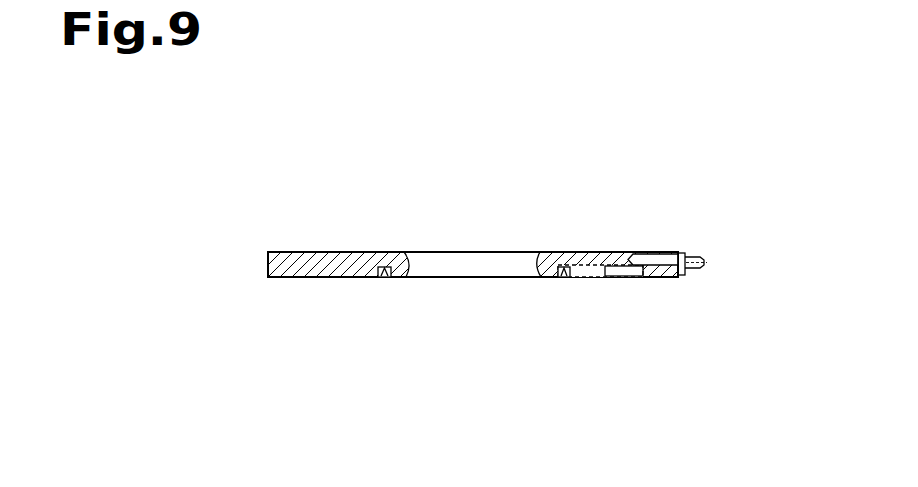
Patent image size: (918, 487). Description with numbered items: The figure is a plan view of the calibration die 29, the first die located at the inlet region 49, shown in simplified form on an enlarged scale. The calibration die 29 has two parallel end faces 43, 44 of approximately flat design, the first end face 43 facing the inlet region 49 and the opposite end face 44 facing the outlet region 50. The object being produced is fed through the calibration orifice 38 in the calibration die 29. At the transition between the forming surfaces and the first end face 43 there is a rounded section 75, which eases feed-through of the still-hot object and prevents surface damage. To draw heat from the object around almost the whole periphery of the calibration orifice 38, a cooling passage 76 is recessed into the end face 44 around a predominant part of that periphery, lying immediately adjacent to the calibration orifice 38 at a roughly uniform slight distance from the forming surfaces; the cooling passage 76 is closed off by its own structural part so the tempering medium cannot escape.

The calibration die 29 is at (327, 276).
The calibration orifice 38 is at (458, 228).
The first end face 43 is at (658, 245).
The end face 44 is at (660, 286).
The inlet region 49 is at (515, 243).
The outlet region 50 is at (463, 398).
The rounded section 75 is at (408, 253).
The cooling passage 76 is at (388, 275).